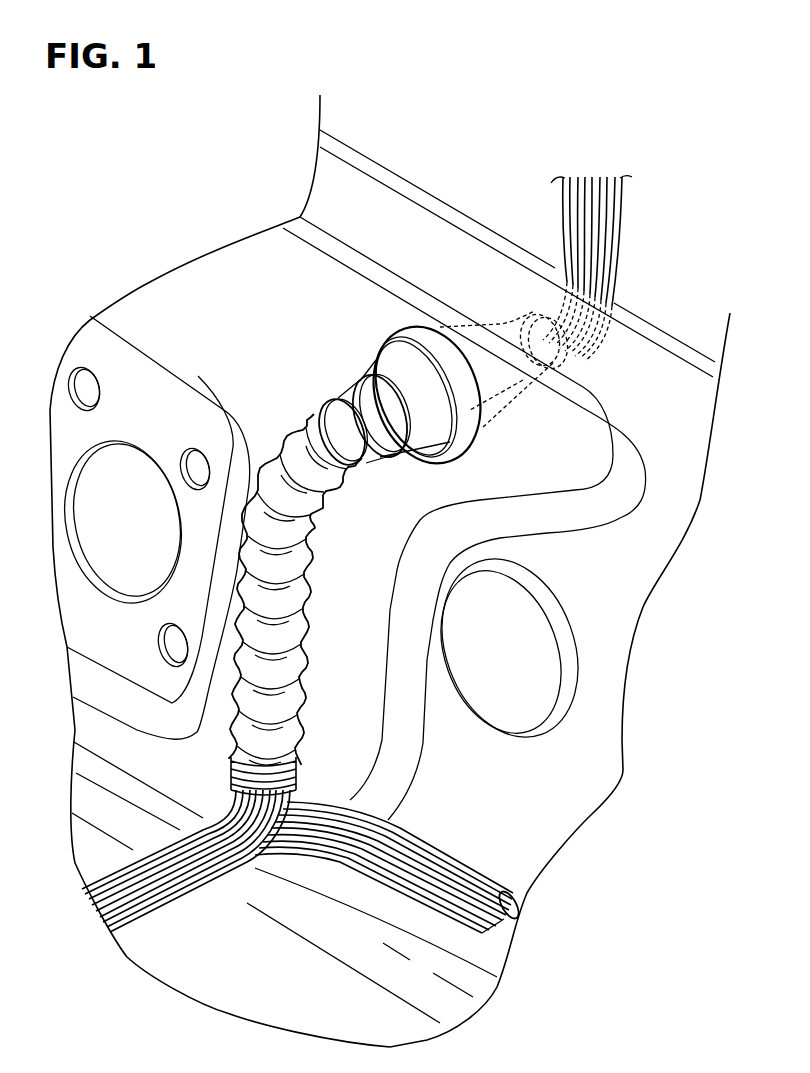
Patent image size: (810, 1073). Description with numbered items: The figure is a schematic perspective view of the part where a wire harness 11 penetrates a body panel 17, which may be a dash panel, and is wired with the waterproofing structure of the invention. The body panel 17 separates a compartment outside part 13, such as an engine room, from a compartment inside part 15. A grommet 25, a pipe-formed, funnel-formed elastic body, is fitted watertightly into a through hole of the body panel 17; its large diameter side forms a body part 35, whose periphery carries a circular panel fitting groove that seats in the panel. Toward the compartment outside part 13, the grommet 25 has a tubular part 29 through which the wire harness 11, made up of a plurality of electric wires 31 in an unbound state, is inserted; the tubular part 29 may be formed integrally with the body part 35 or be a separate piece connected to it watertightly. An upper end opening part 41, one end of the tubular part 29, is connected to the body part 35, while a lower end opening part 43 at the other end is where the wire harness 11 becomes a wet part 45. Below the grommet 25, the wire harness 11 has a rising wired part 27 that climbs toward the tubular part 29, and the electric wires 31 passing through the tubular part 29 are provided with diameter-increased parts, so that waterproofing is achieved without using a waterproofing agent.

The wire harness 11 is at (158, 926).
The compartment outside part 13 is at (328, 999).
The compartment inside part 15 is at (455, 148).
The body panel 17 is at (328, 200).
The grommet 25 is at (377, 326).
The rising wired part 27 is at (233, 786).
The tubular part 29 is at (304, 543).
The electric wires 31 is at (617, 240).
The body part 35 is at (467, 410).
The upper end opening part 41 is at (345, 390).
The lower end opening part 43 is at (293, 797).
The wet part 45 is at (438, 856).